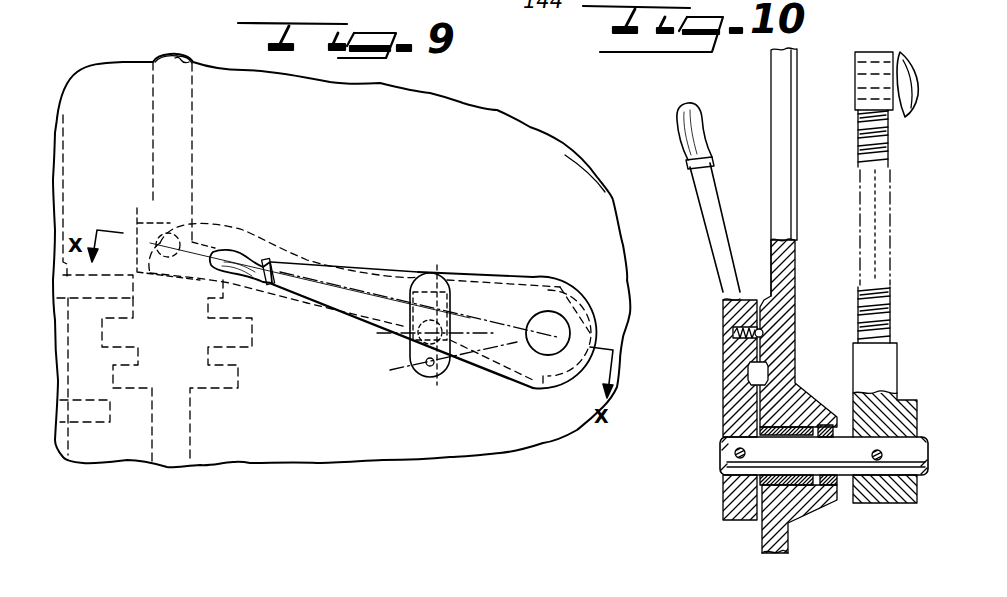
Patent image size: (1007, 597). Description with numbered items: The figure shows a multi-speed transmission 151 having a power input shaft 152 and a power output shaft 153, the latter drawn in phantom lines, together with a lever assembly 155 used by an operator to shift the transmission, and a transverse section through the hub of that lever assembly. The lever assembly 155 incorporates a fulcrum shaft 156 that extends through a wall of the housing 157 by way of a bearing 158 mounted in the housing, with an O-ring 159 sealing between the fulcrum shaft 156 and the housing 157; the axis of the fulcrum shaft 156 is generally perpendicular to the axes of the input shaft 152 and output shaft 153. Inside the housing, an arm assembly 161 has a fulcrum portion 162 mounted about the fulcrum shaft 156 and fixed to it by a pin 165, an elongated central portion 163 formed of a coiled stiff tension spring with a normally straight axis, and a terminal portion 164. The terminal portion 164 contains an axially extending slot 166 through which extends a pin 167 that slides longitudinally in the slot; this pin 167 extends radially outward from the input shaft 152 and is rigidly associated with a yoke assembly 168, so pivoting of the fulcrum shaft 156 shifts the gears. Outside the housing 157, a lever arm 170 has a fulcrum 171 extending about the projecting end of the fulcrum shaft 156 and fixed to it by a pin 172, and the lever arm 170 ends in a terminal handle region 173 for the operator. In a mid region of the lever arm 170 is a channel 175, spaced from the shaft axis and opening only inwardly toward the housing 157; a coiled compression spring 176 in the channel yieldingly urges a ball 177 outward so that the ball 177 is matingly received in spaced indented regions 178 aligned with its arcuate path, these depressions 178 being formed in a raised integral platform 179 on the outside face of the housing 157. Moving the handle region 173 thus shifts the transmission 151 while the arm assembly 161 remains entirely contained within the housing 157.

In FIG. 9, the multi-speed transmission 151 is at (496, 161).
In FIG. 9, the power input shaft 152 is at (185, 56).
In FIG. 9, the power output shaft 153 is at (58, 137).
In FIG. 9, the lever assembly 155 is at (504, 266).
In FIG. 10, the fulcrum shaft 156 is at (845, 458).
In FIG. 9, the housing 157 is at (547, 162).
In FIG. 10, the housing 157 is at (771, 153).
In FIG. 10, the bearing 158 is at (790, 427).
In FIG. 9, the O-ring 159 is at (560, 320).
In FIG. 10, the O-ring 159 is at (823, 424).
In FIG. 10, the arm assembly 161 is at (893, 235).
In FIG. 10, the fulcrum portion 162 is at (885, 405).
In FIG. 10, the elongated central portion 163 is at (887, 203).
In FIG. 10, the terminal portion 164 is at (856, 100).
In FIG. 10, the pin 165 is at (878, 461).
In FIG. 9, the axially extending slot 166 is at (216, 238).
In FIG. 9, the pin 167 is at (188, 232).
In FIG. 9, the yoke assembly 168 is at (150, 218).
In FIG. 10, the yoke assembly 168 is at (905, 56).
In FIG. 10, the lever arm 170 is at (733, 384).
In FIG. 10, the fulcrum 171 is at (730, 426).
In FIG. 10, the pin 172 is at (737, 452).
In FIG. 10, the terminal handle region 173 is at (696, 135).
In FIG. 10, the channel 175 is at (745, 300).
In FIG. 10, the spring 176 is at (735, 334).
In FIG. 10, the ball 177 is at (763, 333).
In FIG. 9, the indented regions 178 is at (437, 264).
In FIG. 9, the raised integral platform 179 is at (432, 380).